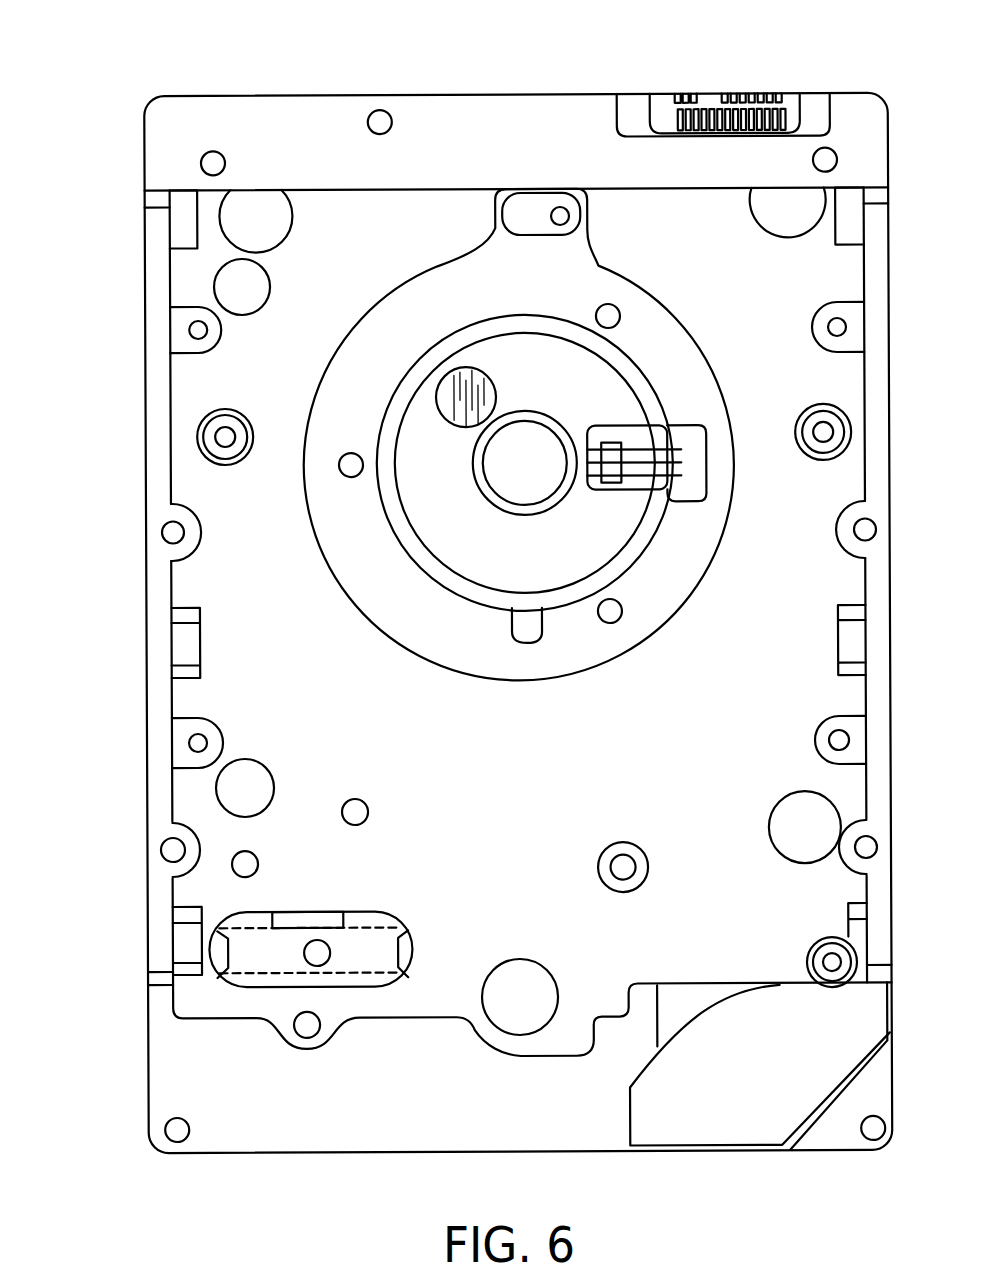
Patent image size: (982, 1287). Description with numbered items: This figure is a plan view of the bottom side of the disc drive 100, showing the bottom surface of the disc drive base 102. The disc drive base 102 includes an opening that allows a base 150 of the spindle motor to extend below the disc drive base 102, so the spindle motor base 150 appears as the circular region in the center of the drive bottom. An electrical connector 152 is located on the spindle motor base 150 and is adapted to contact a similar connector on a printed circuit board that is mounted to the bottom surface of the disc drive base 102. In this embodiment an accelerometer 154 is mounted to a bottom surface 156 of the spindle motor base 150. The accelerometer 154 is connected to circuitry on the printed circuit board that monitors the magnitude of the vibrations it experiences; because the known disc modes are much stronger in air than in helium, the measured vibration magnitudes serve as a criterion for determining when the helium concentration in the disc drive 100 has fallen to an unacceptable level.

The disc drive 100 is at (333, 57).
The disc drive base 102 is at (200, 492).
The spindle motor base 150 is at (617, 571).
The electrical connector 152 is at (617, 436).
The accelerometer 154 is at (448, 402).
The bottom surface 156 is at (455, 511).